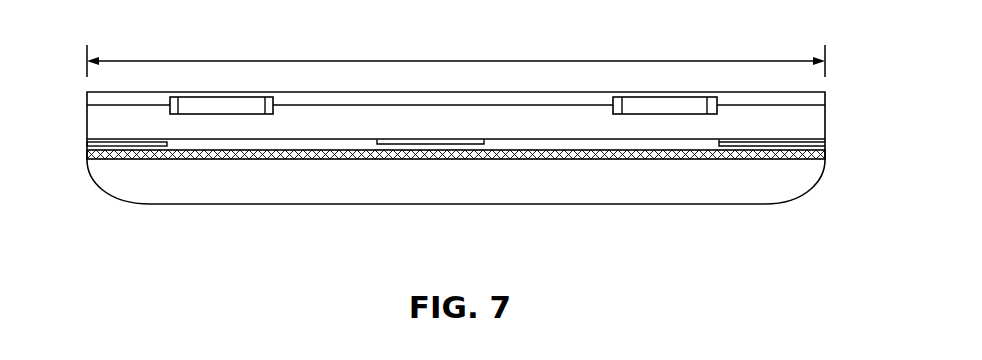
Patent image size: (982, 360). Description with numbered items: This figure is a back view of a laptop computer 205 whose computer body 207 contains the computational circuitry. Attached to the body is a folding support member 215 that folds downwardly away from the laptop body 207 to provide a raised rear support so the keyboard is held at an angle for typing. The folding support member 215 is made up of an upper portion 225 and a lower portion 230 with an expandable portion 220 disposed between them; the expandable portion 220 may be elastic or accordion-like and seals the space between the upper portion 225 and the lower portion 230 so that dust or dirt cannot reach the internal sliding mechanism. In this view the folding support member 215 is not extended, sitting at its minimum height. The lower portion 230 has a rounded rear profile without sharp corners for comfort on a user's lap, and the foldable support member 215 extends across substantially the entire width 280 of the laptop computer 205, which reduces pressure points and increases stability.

The laptop computer 205 is at (837, 207).
The computer body 207 is at (95, 124).
The folding support member 215 is at (213, 180).
The expandable portion 220 is at (613, 153).
The upper portion 225 is at (293, 148).
The lower portion 230 is at (499, 179).
The width 280 is at (299, 57).